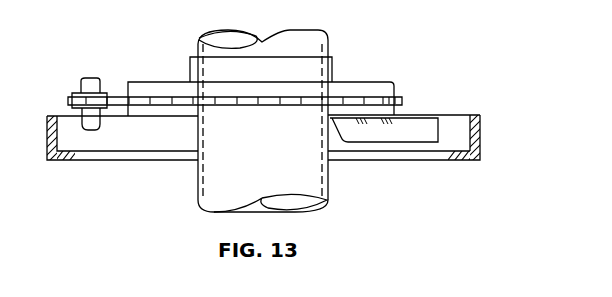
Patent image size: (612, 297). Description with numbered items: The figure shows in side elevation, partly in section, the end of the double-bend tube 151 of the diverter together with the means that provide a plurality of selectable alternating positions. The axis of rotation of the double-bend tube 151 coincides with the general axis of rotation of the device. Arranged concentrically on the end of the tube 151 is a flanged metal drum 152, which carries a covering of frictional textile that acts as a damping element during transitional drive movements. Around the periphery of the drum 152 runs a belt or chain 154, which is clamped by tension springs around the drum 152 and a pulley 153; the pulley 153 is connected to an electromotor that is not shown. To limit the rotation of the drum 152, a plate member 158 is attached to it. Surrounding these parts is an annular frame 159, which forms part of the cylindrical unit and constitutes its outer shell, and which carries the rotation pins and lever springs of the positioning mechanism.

The double-bend tube 151 is at (330, 196).
The flanged metal drum 152 is at (360, 90).
The pulley 153 is at (80, 86).
The belt or chain 154 is at (402, 102).
The plate member 158 is at (378, 132).
The annular frame 159 is at (463, 157).